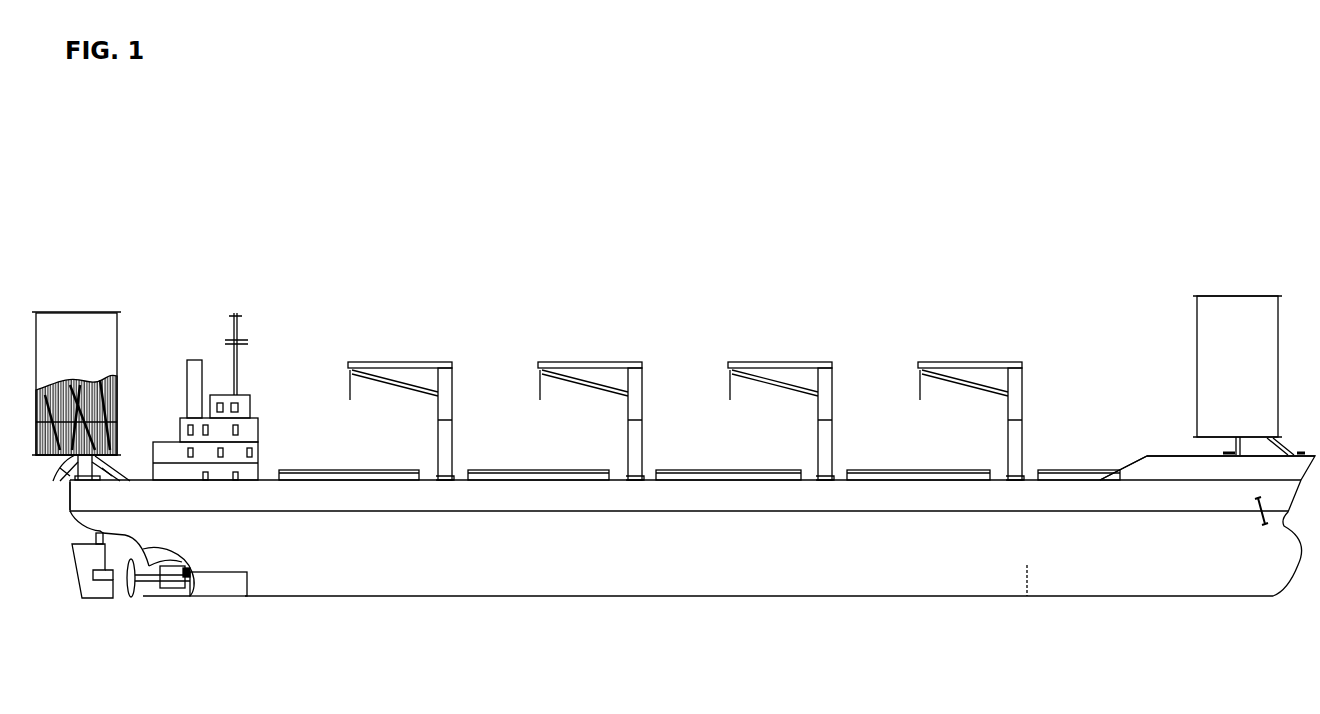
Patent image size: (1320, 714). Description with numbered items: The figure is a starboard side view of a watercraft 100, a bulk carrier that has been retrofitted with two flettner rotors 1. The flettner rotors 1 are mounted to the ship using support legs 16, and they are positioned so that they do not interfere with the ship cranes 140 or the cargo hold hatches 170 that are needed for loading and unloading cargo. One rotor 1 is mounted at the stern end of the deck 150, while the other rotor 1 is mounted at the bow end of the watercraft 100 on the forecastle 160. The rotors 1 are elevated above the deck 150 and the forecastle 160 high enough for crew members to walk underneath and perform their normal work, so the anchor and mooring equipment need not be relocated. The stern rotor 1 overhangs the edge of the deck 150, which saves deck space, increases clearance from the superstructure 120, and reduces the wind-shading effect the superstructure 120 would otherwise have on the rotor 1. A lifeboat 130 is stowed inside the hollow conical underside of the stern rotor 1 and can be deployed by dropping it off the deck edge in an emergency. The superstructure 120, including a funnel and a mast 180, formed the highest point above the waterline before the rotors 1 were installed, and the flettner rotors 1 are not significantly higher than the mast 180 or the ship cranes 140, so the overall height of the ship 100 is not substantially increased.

The watercraft 100 is at (97, 230).
The flettner rotor 1 is at (115, 313).
The support legs 16 is at (118, 466).
The superstructure 120 is at (256, 418).
The lifeboat 130 is at (72, 480).
The ship cranes 140 is at (424, 362).
The deck 150 is at (648, 472).
The forecastle 160 is at (1157, 456).
The cargo hold hatches 170 is at (477, 470).
The mast 180 is at (235, 316).